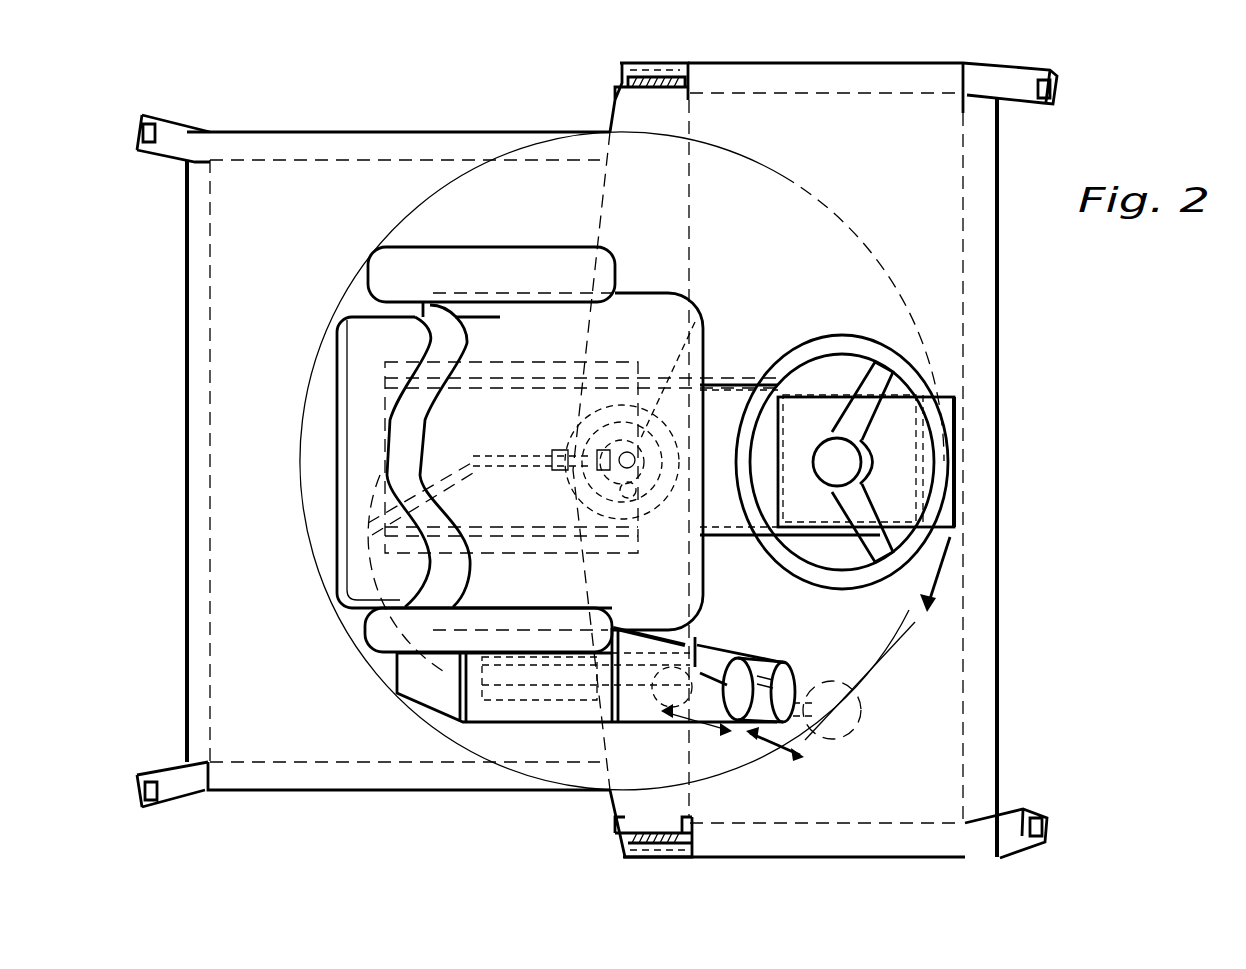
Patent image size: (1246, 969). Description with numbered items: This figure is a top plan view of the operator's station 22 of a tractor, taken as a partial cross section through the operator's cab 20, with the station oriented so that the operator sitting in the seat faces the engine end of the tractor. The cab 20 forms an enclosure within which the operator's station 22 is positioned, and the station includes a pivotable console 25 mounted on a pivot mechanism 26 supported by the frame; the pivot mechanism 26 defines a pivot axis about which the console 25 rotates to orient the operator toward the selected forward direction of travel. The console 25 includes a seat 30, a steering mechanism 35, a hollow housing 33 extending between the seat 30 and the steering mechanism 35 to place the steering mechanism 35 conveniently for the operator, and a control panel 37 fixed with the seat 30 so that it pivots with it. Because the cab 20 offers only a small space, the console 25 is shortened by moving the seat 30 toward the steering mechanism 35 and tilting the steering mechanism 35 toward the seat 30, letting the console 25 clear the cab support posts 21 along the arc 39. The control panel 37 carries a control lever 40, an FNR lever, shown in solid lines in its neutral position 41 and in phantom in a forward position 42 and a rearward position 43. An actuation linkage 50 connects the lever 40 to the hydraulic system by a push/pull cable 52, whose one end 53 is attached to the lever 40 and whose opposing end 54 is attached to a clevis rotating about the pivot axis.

The operator's cab 20 is at (870, 66).
The cab support posts 21 is at (664, 63).
The operator's station 22 is at (655, 315).
The pivotable console 25 is at (737, 385).
The pivot mechanism 26 is at (705, 322).
The seat 30 is at (360, 352).
The hollow housing 33 is at (955, 415).
The steering mechanism 35 is at (915, 376).
The control panel 37 is at (622, 718).
The arc 39 is at (813, 190).
The control lever 40 is at (738, 723).
The neutral position 41 is at (757, 658).
The forward position 42 is at (838, 680).
The rearward position 43 is at (700, 645).
The actuation linkage 50 is at (553, 415).
The push/pull cable 52 is at (370, 575).
The one end 53 is at (660, 677).
The opposing end 54 is at (545, 485).